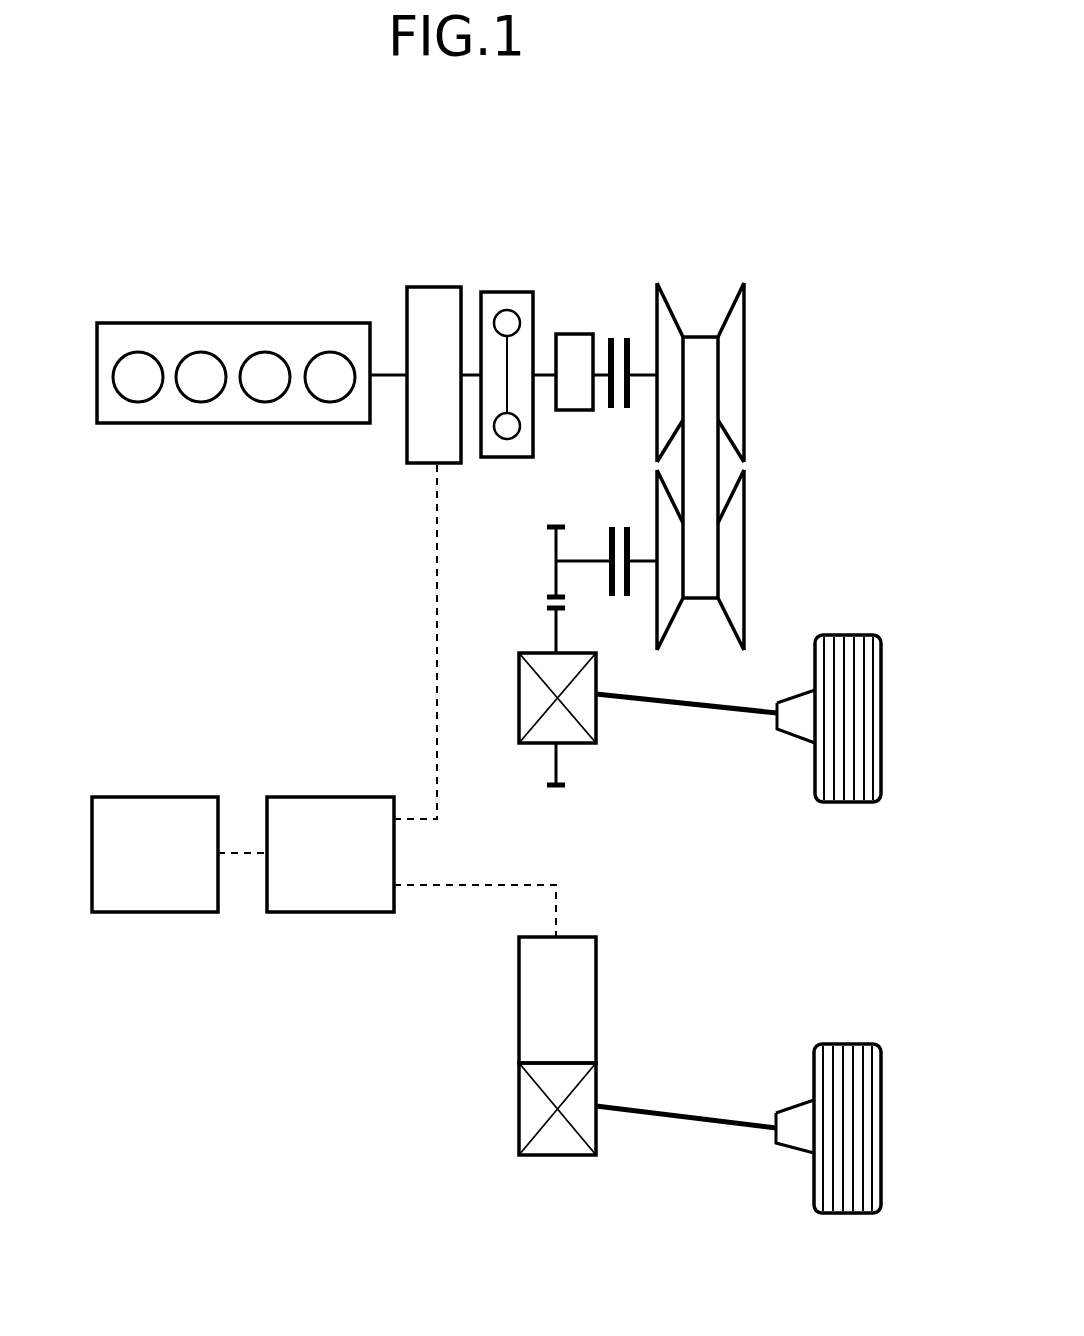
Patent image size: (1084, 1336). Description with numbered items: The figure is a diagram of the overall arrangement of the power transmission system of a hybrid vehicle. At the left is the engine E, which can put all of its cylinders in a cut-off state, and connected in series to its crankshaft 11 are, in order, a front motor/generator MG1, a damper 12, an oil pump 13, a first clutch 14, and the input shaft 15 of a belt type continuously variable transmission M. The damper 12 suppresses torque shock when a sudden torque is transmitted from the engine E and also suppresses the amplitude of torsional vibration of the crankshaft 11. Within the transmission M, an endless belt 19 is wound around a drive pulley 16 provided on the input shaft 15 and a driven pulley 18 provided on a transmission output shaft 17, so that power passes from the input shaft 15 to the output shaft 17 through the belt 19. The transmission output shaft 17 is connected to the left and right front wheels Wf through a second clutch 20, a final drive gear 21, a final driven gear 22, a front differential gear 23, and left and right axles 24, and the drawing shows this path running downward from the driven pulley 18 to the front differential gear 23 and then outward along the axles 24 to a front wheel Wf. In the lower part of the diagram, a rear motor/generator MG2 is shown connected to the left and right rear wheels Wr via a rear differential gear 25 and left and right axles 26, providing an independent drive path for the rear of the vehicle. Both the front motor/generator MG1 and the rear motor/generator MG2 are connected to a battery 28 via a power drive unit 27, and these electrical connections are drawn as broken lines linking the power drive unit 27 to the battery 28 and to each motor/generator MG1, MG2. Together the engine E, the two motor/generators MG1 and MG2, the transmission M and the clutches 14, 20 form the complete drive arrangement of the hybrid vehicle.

The engine E is at (212, 337).
The crankshaft 11 is at (392, 363).
The front motor/generator MG1 is at (438, 295).
The damper 12 is at (515, 300).
The oil pump 13 is at (577, 345).
The first clutch 14 is at (619, 340).
The input shaft 15 is at (646, 378).
The drive pulley 16 is at (733, 370).
The endless belt 19 is at (702, 472).
The belt type continuously variable transmission M is at (755, 448).
The driven pulley 18 is at (735, 547).
The transmission output shaft 17 is at (652, 552).
The second clutch 20 is at (618, 597).
The final drive gear 21 is at (555, 524).
The final driven gear 22 is at (548, 609).
The front differential gear 23 is at (585, 707).
The axles 24 is at (695, 707).
The front wheels Wf is at (843, 642).
The power drive unit 27 is at (344, 873).
The battery 28 is at (177, 873).
The rear motor/generator MG2 is at (578, 950).
The rear differential gear 25 is at (588, 1092).
The axles 26 is at (690, 1115).
The rear wheels Wr is at (847, 1057).